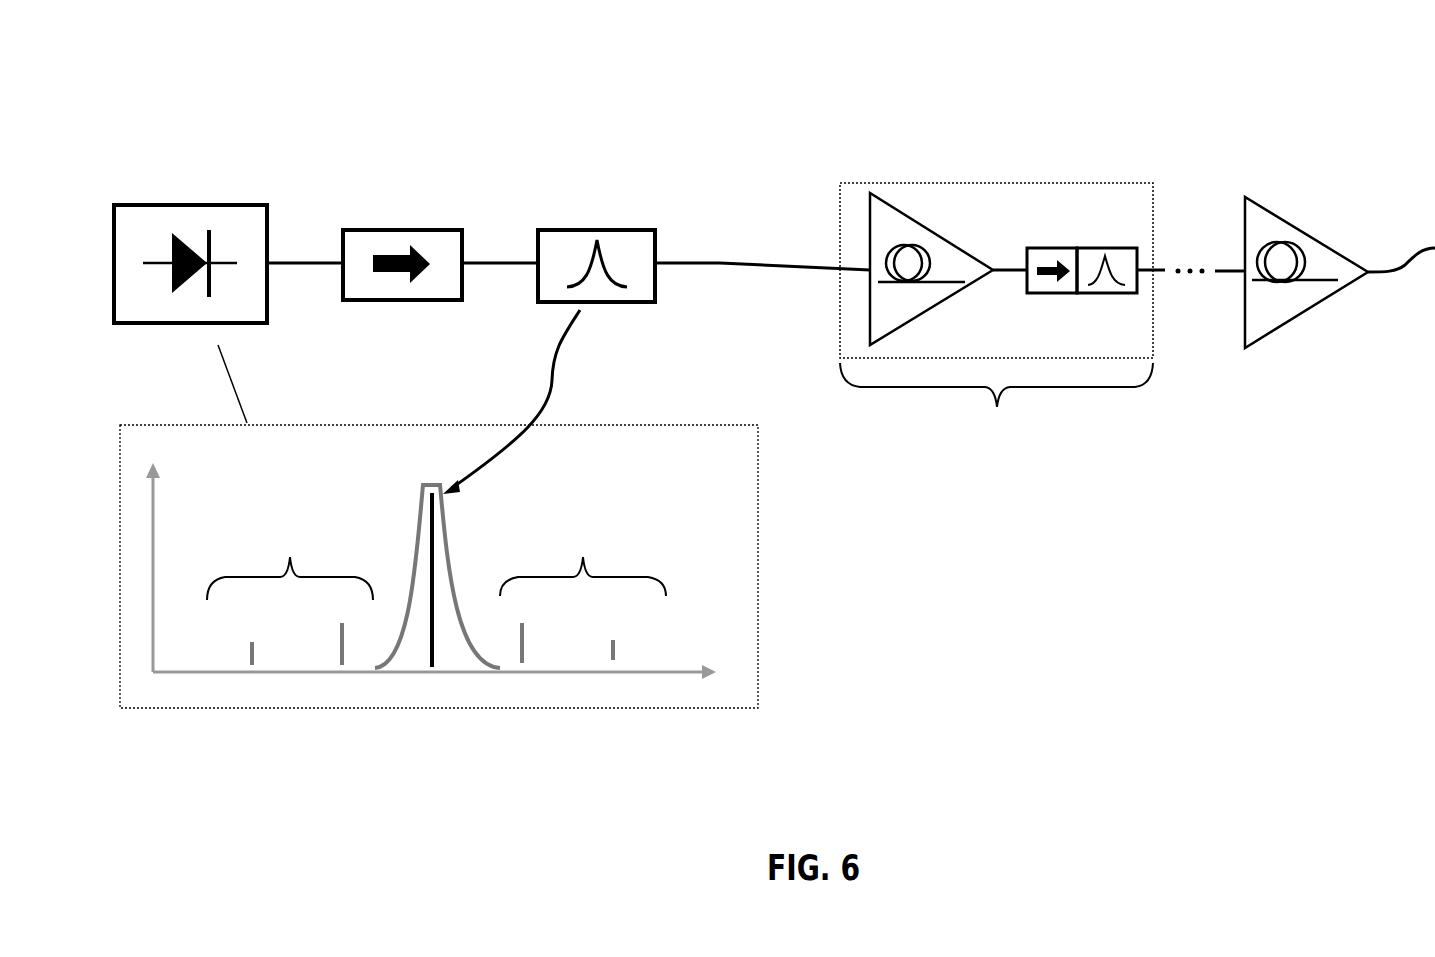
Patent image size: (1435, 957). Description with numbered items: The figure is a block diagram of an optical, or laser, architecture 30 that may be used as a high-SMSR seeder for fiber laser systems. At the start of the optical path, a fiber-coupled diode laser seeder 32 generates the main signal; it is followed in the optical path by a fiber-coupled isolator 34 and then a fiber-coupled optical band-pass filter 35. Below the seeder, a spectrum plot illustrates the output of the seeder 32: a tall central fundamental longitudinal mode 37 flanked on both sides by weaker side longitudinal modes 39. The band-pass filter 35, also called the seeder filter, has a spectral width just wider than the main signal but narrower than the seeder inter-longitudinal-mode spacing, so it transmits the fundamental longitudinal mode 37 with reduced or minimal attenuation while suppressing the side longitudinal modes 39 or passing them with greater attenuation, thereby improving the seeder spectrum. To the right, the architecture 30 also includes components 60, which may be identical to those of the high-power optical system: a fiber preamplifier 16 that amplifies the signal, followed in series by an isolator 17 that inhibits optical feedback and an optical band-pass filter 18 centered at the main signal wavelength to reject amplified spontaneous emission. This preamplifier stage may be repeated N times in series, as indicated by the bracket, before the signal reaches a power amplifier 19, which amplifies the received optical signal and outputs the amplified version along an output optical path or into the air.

The laser architecture 30 is at (337, 105).
The fiber-coupled diode laser seeder 32 is at (115, 205).
The fiber-coupled isolator 34 is at (382, 228).
The fiber-coupled optical band-pass filter 35 is at (598, 228).
The fundamental longitudinal mode 37 is at (433, 555).
The side longitudinal modes 39 is at (436, 598).
The components 60 is at (835, 133).
The fiber preamplifier 16 is at (970, 257).
The isolator 17 is at (1027, 292).
The optical band-pass filter 18 is at (1093, 293).
The power amplifier 19 is at (1273, 213).